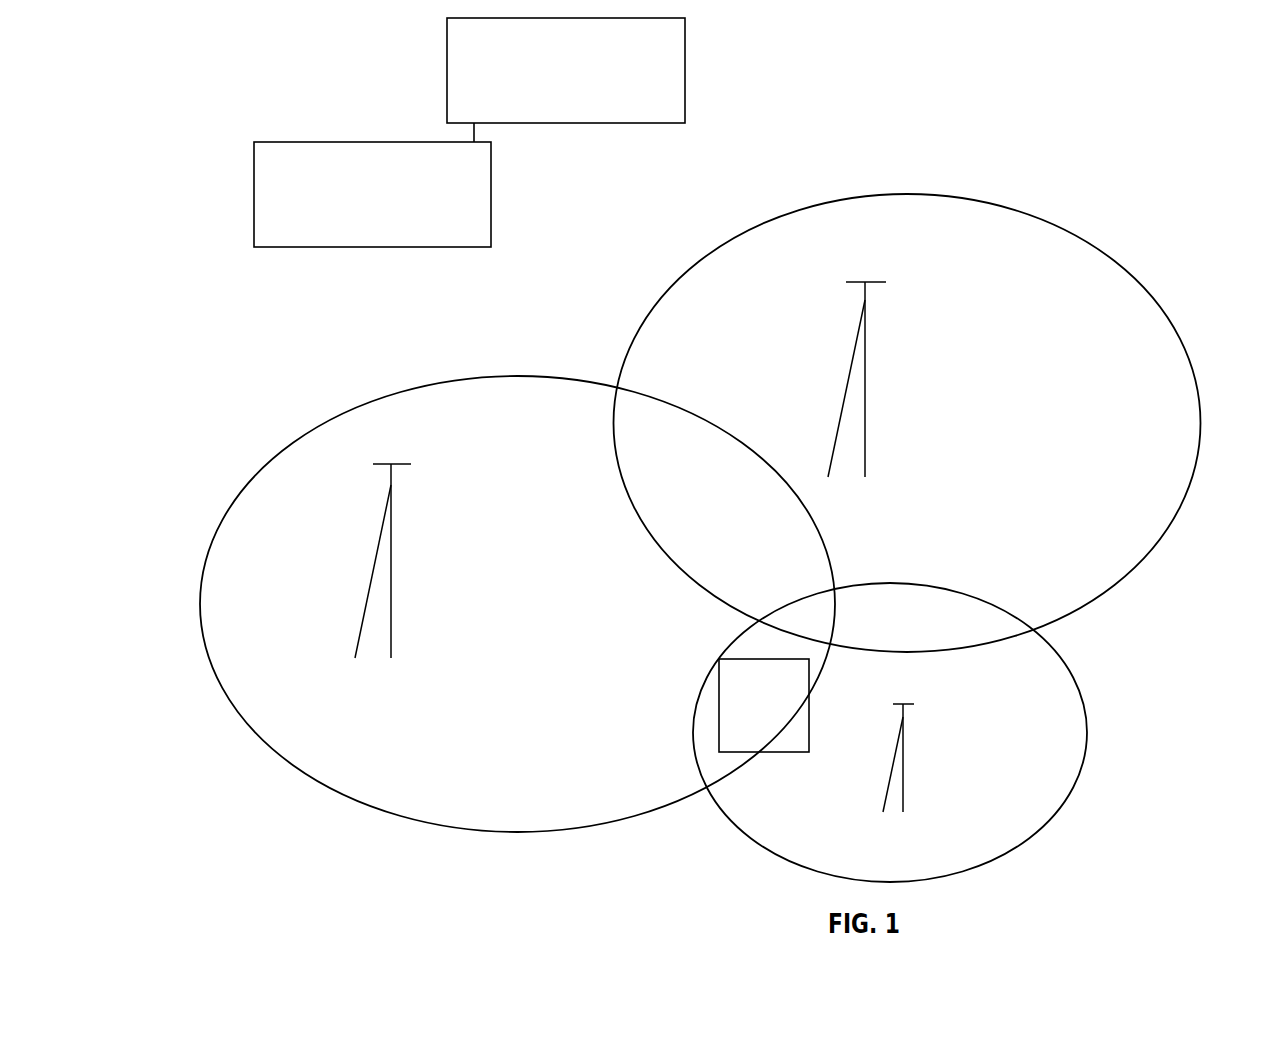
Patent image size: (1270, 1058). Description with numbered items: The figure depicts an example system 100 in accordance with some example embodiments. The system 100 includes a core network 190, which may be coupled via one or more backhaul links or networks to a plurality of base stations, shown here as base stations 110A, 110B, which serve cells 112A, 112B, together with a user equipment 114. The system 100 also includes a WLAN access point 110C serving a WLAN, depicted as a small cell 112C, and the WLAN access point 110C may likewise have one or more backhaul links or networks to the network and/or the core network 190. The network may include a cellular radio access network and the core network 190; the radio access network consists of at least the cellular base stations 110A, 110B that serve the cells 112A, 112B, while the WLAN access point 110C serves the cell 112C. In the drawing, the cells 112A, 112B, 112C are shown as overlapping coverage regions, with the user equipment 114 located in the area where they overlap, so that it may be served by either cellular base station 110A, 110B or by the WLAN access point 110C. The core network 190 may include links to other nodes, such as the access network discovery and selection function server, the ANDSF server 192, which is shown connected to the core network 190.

The system 100 is at (942, 56).
The base station 110A is at (370, 580).
The base station 110B is at (844, 397).
The WLAN access point 110C is at (891, 770).
The cell 112A is at (497, 377).
The cell 112B is at (970, 198).
The small cell 112C is at (1075, 697).
The user equipment 114 is at (782, 731).
The core network 190 is at (467, 207).
The ANDSF server 192 is at (667, 82).